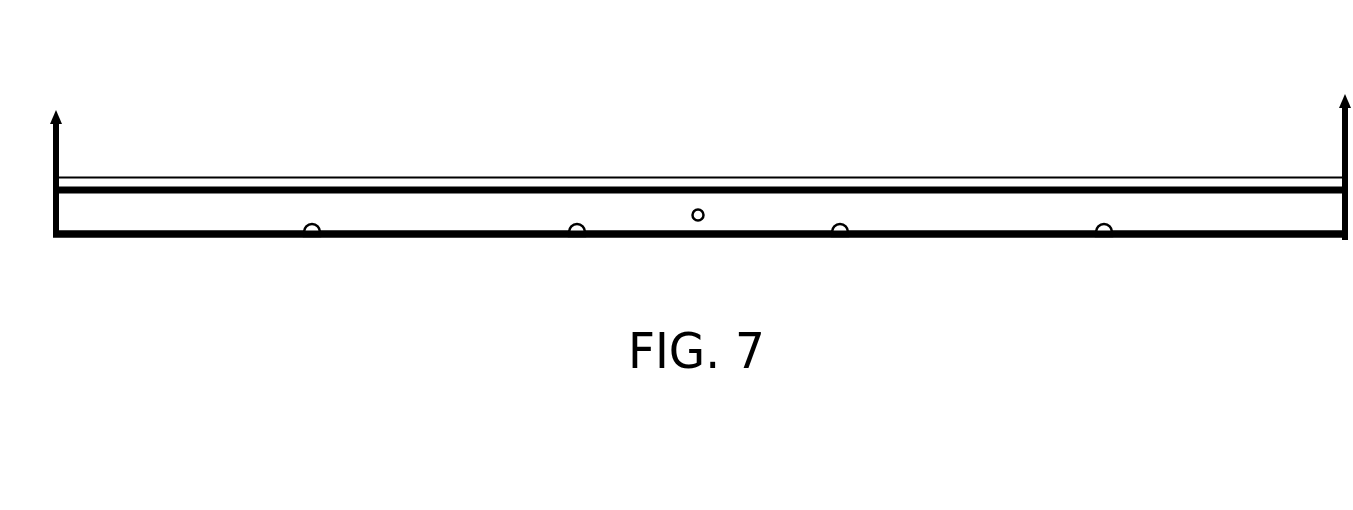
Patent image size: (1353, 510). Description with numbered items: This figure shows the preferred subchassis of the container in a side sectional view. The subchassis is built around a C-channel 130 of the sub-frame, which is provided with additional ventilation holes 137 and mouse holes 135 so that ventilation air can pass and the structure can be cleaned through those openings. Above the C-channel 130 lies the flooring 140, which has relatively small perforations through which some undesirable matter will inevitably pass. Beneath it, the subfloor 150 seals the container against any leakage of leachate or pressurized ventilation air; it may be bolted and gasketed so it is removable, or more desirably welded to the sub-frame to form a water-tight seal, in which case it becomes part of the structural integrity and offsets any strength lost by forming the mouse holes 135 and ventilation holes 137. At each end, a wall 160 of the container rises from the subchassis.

The C-channel 130 is at (1062, 226).
The mouse hole 135 is at (311, 240).
The ventilation hole 137 is at (697, 209).
The flooring 140 is at (317, 166).
The subfloor 150 is at (147, 247).
The wall 160 is at (58, 150).